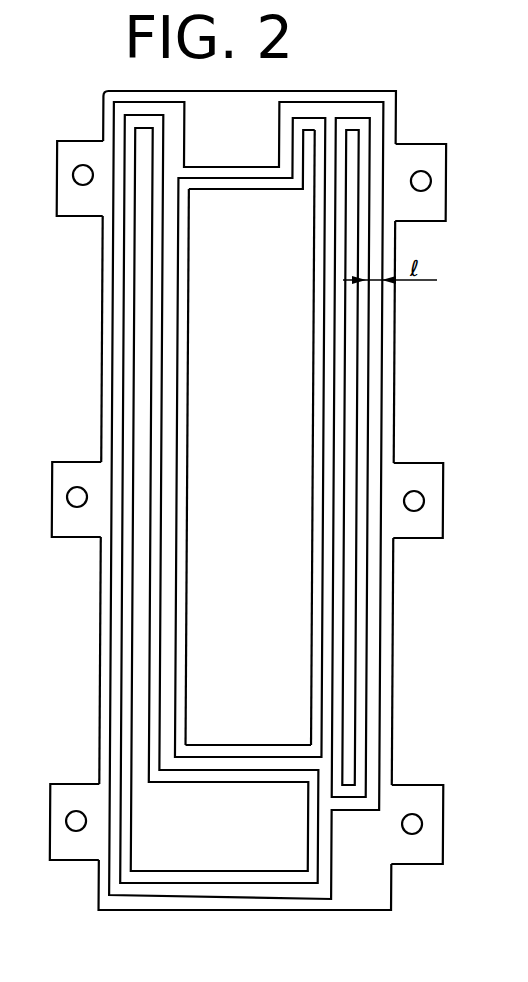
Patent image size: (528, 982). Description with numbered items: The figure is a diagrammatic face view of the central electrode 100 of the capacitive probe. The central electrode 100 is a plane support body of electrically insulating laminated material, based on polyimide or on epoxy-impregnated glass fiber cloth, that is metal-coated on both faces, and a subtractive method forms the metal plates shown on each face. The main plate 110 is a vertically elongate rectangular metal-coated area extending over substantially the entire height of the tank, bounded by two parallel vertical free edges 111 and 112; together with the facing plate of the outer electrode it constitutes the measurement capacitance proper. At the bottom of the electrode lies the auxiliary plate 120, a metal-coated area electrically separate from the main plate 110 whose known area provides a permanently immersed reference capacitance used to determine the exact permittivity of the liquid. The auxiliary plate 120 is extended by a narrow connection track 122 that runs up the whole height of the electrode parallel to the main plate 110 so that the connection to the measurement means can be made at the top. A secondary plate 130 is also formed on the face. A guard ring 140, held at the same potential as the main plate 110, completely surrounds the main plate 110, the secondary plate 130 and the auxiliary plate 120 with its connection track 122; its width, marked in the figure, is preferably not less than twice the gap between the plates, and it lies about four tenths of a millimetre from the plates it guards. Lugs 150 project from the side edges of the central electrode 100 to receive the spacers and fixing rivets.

The central electrode 100 is at (392, 58).
The main plate 110 is at (198, 332).
The vertical free edge 111 is at (187, 395).
The vertical free edge 112 is at (313, 397).
The auxiliary plate 120 is at (300, 857).
The connection track 122 is at (137, 645).
The secondary plate 130 is at (355, 343).
The guard ring 140 is at (372, 613).
The lug 150 is at (73, 153).